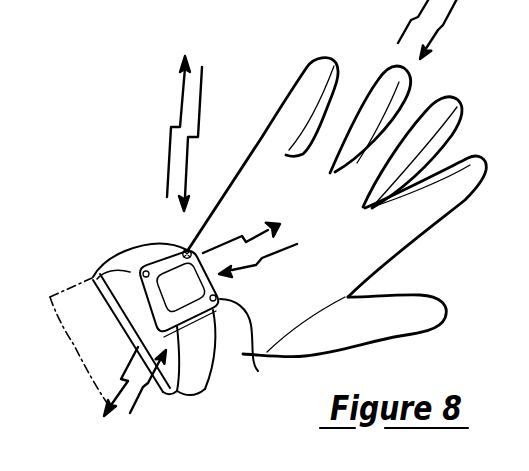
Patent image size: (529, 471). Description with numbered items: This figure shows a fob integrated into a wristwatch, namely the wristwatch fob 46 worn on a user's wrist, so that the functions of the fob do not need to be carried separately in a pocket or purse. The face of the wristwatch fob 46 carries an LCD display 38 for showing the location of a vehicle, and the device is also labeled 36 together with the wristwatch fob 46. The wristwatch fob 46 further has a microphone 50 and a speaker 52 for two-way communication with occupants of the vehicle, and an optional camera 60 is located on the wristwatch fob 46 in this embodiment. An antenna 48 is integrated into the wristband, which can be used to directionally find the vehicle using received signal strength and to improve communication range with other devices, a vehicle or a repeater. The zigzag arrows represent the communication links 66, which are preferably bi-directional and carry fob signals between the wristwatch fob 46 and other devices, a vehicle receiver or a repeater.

The wrist-worn device 36 is at (168, 262).
The wristwatch fob 46 is at (197, 248).
The LCD display 38 is at (178, 288).
The antenna 48 is at (147, 260).
The microphone 50 is at (258, 371).
The speaker 52 is at (125, 272).
The camera 60 is at (187, 252).
The communication links 66 is at (202, 105).